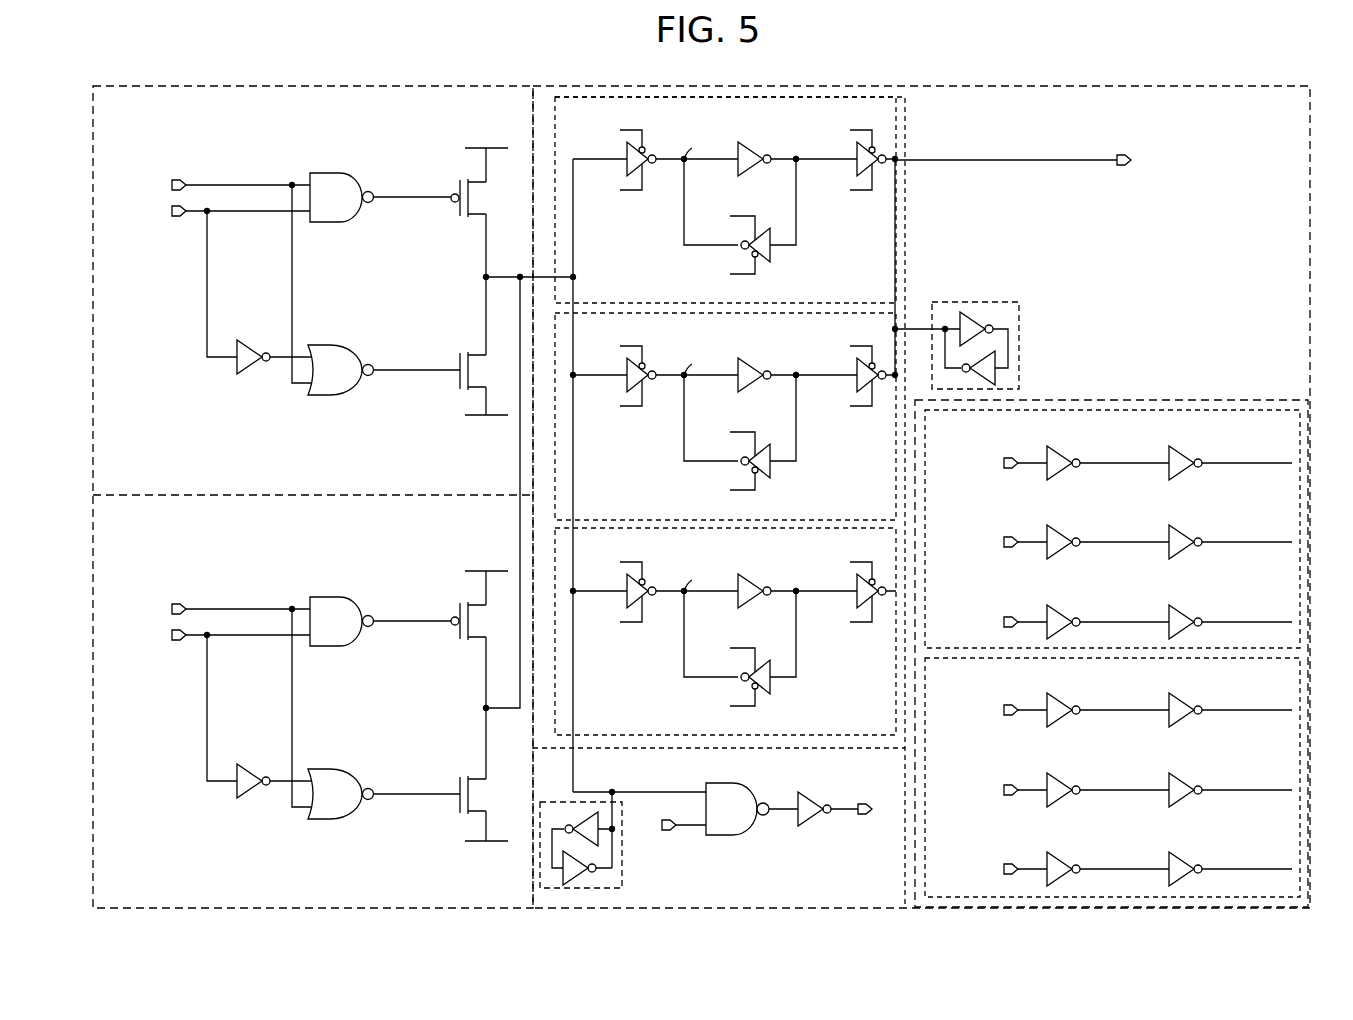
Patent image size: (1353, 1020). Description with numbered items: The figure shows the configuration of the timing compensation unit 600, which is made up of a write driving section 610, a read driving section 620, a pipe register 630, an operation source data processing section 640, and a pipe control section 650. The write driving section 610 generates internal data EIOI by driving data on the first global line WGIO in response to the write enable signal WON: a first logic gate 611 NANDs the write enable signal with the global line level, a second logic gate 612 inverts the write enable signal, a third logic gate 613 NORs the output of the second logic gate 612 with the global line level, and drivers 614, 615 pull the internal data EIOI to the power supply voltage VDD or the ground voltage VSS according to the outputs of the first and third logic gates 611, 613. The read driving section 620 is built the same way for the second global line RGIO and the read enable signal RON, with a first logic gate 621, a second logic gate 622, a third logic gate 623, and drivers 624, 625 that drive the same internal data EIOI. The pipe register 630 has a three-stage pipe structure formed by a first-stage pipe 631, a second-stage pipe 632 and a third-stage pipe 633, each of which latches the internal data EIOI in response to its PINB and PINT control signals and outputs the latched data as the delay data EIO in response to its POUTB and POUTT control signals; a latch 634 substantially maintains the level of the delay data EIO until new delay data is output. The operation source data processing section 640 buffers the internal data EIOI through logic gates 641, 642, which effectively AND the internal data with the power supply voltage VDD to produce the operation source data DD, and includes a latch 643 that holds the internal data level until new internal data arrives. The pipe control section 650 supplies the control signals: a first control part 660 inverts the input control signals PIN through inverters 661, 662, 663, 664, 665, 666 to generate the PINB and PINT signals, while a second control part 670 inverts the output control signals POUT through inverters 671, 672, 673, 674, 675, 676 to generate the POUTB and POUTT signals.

The timing compensation unit 600 is at (104, 63).
The write driving section 610 is at (140, 131).
The first logic gate 611 is at (345, 173).
The second logic gate 612 is at (246, 343).
The third logic gate 613 is at (342, 345).
The driver 614 is at (480, 198).
The driver 615 is at (484, 371).
The read driving section 620 is at (155, 536).
The first logic gate 621 is at (345, 597).
The second logic gate 622 is at (246, 767).
The third logic gate 623 is at (342, 769).
The driver 624 is at (480, 621).
The driver 625 is at (484, 795).
The pipe register 630 is at (1239, 127).
The first-stage pipe 631 is at (860, 282).
The second-stage pipe 632 is at (860, 498).
The third-stage pipe 633 is at (860, 714).
The latch 634 is at (1005, 302).
The operation source data processing section 640 is at (860, 888).
The logic gate 641 is at (740, 783).
The logic gate 642 is at (809, 794).
The latch 643 is at (622, 868).
The pipe control section 650 is at (1115, 400).
The first control part 660 is at (935, 436).
The inverter 661 is at (1055, 447).
The inverter 662 is at (1177, 447).
The inverter 663 is at (1055, 526).
The inverter 664 is at (1177, 526).
The inverter 665 is at (1055, 606).
The inverter 666 is at (1177, 606).
The second control part 670 is at (935, 684).
The inverter 671 is at (1055, 694).
The inverter 672 is at (1177, 694).
The inverter 673 is at (1055, 774).
The inverter 674 is at (1177, 774).
The inverter 675 is at (1055, 853).
The inverter 676 is at (1177, 853).